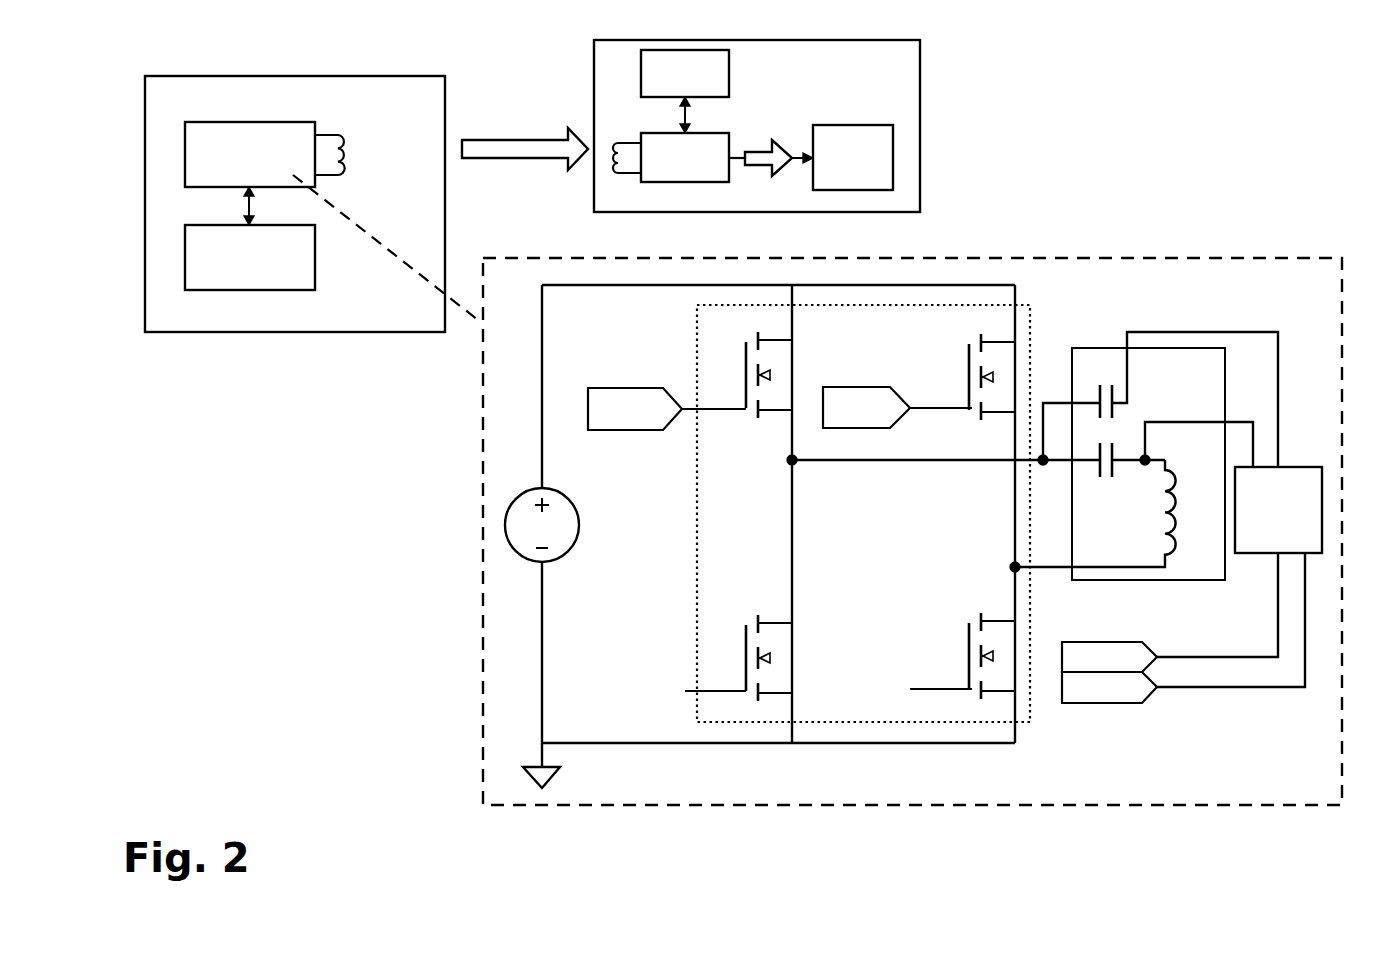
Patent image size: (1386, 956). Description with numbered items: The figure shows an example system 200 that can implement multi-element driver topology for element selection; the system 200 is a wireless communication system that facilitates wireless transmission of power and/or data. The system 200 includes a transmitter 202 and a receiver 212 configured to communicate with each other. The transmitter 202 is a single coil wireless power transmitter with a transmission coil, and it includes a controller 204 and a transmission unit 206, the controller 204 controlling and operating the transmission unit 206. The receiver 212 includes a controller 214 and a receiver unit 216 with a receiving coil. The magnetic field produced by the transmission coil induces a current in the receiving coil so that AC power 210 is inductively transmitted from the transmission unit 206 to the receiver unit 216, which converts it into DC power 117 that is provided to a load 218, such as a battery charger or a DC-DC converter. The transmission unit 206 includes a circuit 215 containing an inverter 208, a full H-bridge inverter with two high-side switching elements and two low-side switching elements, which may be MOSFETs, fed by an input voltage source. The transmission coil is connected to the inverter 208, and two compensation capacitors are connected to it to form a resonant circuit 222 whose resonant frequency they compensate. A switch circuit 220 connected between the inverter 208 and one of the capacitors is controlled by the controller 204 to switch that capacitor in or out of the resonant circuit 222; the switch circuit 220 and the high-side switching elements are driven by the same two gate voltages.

The system 200 is at (204, 768).
The transmitter 202 is at (280, 75).
The controller 204 is at (228, 272).
The transmission unit 206 is at (228, 169).
The AC power 210 is at (521, 137).
The receiver 212 is at (920, 118).
The controller 214 is at (663, 88).
The receiver unit 216 is at (663, 172).
The output signal to load 117 is at (770, 145).
The load 218 is at (831, 172).
The circuit 215 is at (483, 607).
The inverter 208 is at (697, 600).
The resonant circuit 222 is at (1182, 370).
The switch circuit 220 is at (1256, 525).